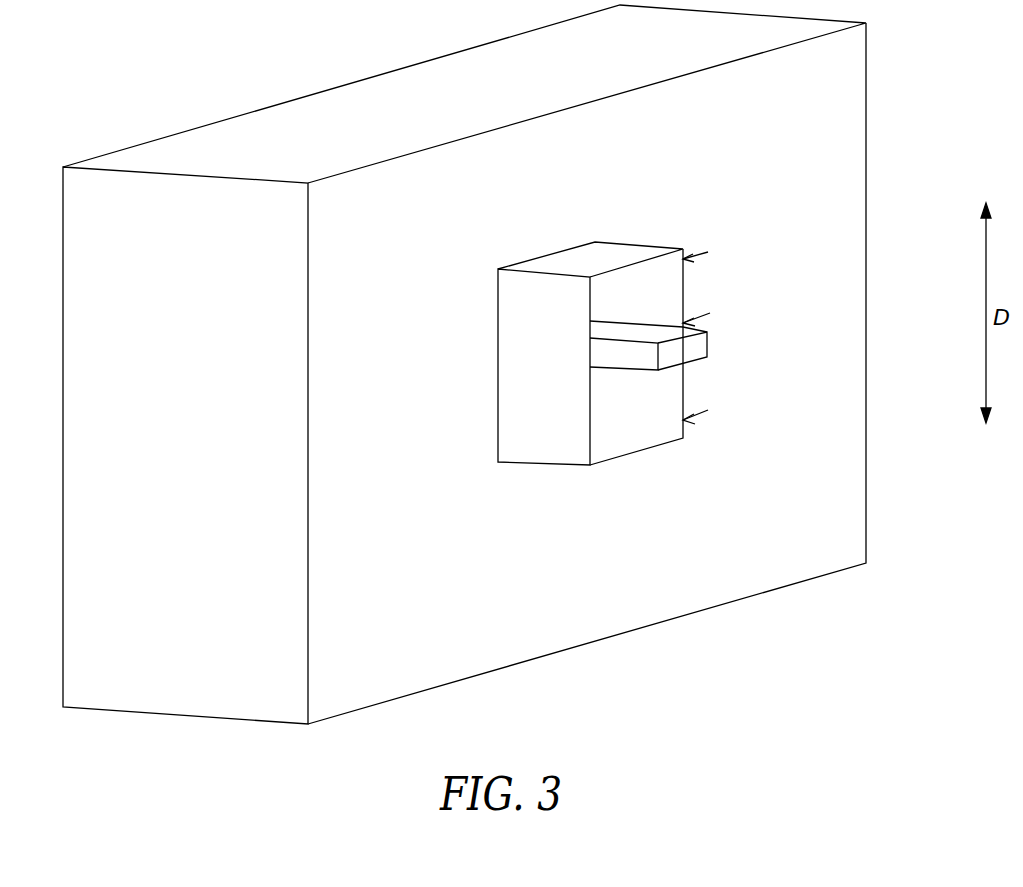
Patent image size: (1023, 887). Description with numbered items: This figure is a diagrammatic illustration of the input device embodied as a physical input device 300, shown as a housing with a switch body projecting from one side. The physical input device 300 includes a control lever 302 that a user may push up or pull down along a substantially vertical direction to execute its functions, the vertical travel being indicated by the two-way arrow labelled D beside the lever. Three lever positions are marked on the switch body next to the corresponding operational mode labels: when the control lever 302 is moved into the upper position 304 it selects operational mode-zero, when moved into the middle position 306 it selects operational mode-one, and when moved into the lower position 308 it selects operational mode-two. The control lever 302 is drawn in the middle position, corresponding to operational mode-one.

The physical input device 300 is at (867, 46).
The control lever 302 is at (630, 355).
The position for operational mode-0 304 is at (684, 257).
The position for operational mode-1 306 is at (707, 328).
The position for operational mode-2 308 is at (683, 423).